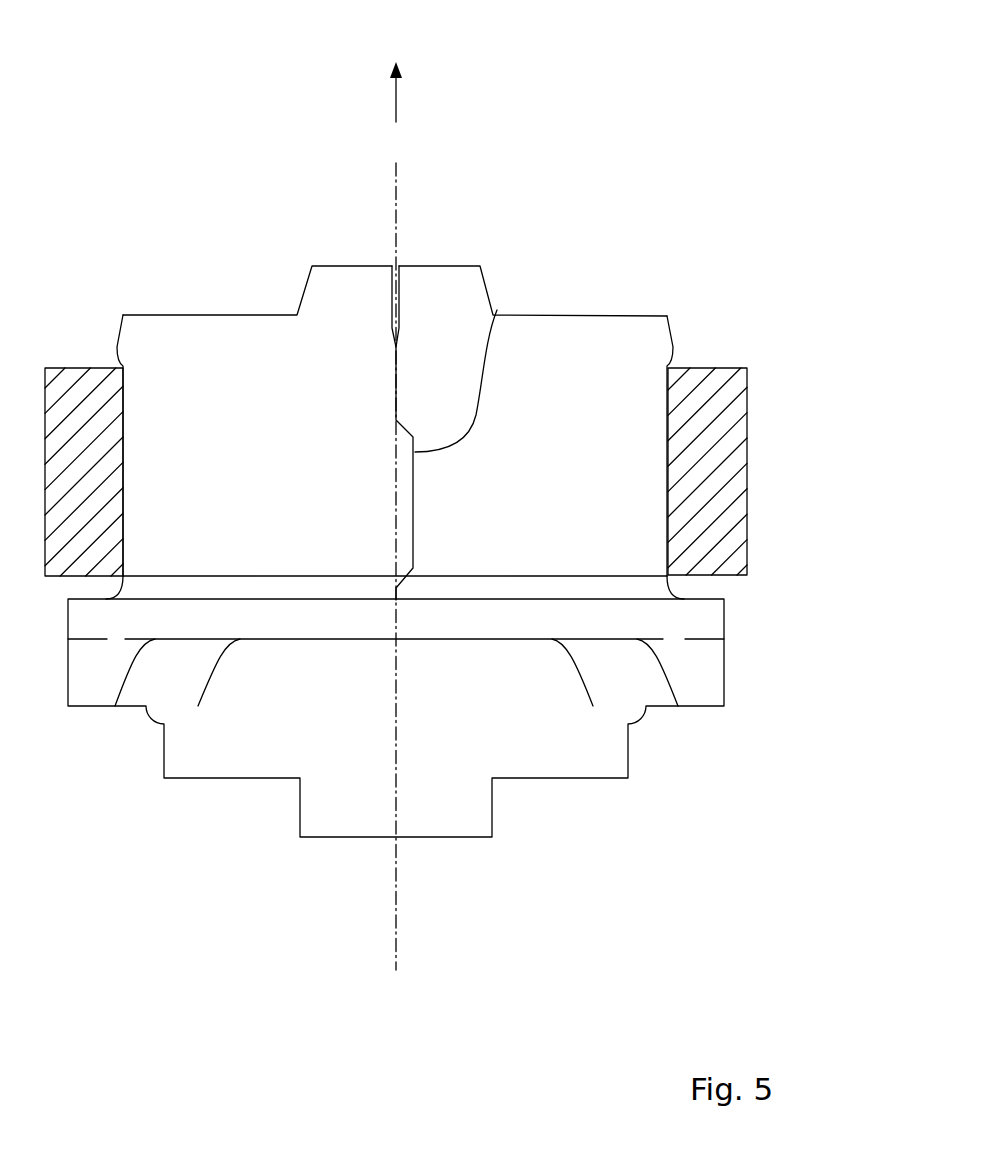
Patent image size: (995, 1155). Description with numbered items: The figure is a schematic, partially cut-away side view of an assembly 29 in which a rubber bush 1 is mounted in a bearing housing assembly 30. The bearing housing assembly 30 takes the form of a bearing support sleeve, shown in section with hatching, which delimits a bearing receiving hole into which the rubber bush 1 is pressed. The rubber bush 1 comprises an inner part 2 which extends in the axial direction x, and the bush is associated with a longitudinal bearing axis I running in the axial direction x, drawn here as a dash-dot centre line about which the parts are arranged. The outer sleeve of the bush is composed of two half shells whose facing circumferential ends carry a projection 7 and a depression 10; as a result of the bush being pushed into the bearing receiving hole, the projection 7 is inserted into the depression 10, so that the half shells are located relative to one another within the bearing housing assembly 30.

The assembly 29 is at (130, 90).
The rubber bush 1 is at (171, 305).
The projection 7 is at (407, 468).
The depression 10 is at (497, 310).
The bearing housing assembly 30 is at (721, 376).
The inner part 2 is at (485, 822).
The axial direction x is at (396, 98).
The longitudinal bearing axis I is at (396, 196).